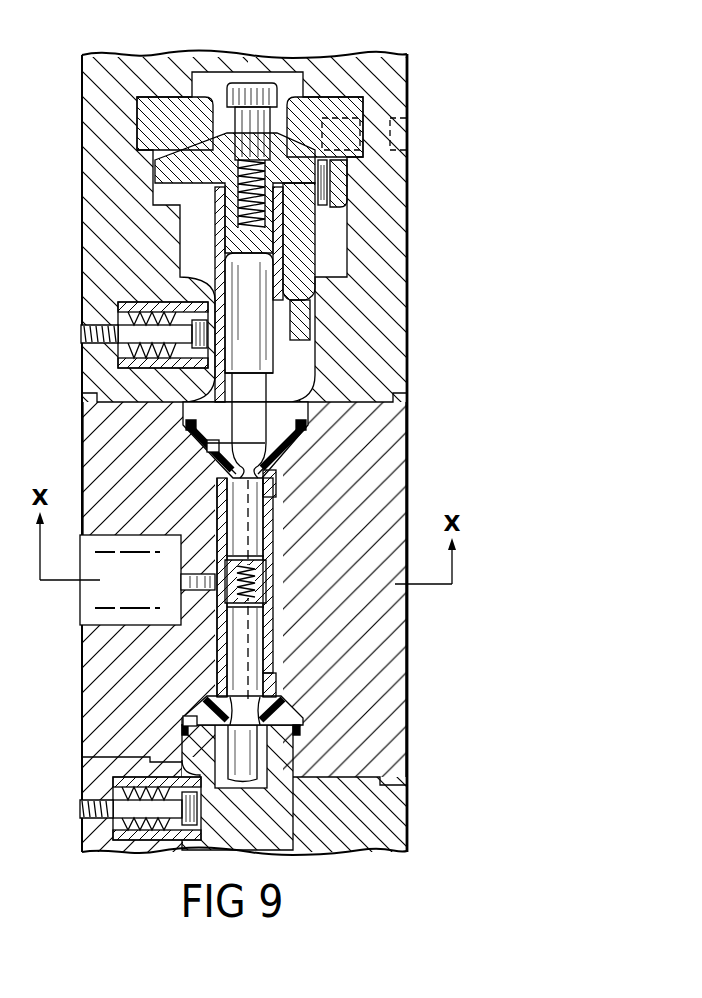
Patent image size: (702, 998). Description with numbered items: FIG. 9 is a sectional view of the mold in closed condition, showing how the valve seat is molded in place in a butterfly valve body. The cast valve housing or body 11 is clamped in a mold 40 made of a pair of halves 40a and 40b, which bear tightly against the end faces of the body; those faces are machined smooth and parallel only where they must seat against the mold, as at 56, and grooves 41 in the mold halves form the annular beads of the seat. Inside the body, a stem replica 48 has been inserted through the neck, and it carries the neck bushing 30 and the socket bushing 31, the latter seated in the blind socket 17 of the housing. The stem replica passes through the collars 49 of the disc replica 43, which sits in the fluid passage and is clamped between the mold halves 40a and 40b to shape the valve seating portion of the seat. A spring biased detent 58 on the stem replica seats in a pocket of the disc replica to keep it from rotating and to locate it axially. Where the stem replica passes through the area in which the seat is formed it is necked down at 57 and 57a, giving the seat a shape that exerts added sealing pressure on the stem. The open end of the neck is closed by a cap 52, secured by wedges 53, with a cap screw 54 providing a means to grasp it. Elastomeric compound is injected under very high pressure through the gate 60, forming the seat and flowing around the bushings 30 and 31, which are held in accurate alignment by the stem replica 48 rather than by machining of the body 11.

The valve housing or body 11 is at (320, 233).
The blind socket 17 is at (252, 777).
The neck bushing 30 is at (288, 388).
The socket bushing 31 is at (262, 774).
The mold 40 is at (405, 445).
The mold half 40a is at (82, 692).
The mold half 40b is at (406, 660).
The grooves 41 is at (312, 430).
The disc replica 43 is at (205, 652).
The stem replica 48 is at (253, 630).
The collars 49 is at (423, 700).
The cap 52 is at (193, 153).
The wedges 53 is at (200, 107).
The cap screw 54 is at (255, 90).
The end face seating surface 56 is at (305, 427).
The necked down portion 57 is at (233, 462).
The necked down portion 57a is at (185, 722).
The spring biased detent 58 is at (267, 577).
The gate 60 is at (182, 578).